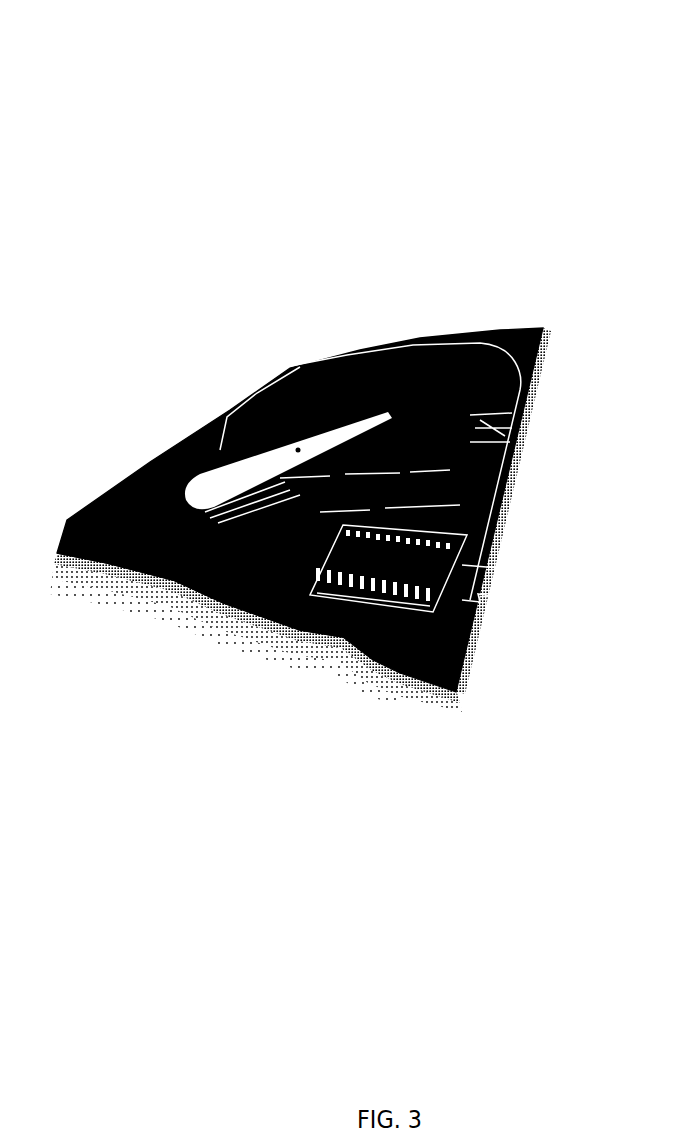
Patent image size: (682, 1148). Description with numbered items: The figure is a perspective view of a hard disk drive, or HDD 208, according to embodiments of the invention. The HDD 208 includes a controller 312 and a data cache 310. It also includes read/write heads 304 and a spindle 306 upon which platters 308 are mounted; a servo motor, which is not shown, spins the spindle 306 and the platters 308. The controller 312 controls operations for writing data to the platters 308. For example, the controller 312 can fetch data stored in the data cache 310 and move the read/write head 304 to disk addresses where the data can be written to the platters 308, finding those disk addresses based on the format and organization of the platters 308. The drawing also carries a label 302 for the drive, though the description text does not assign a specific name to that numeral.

The hard disk drive 208 is at (98, 36).
The housing 302 is at (86, 587).
The read/write heads 304 is at (253, 397).
The spindle 306 is at (377, 350).
The platters 308 is at (514, 416).
The data cache 310 is at (481, 583).
The controller 312 is at (332, 636).